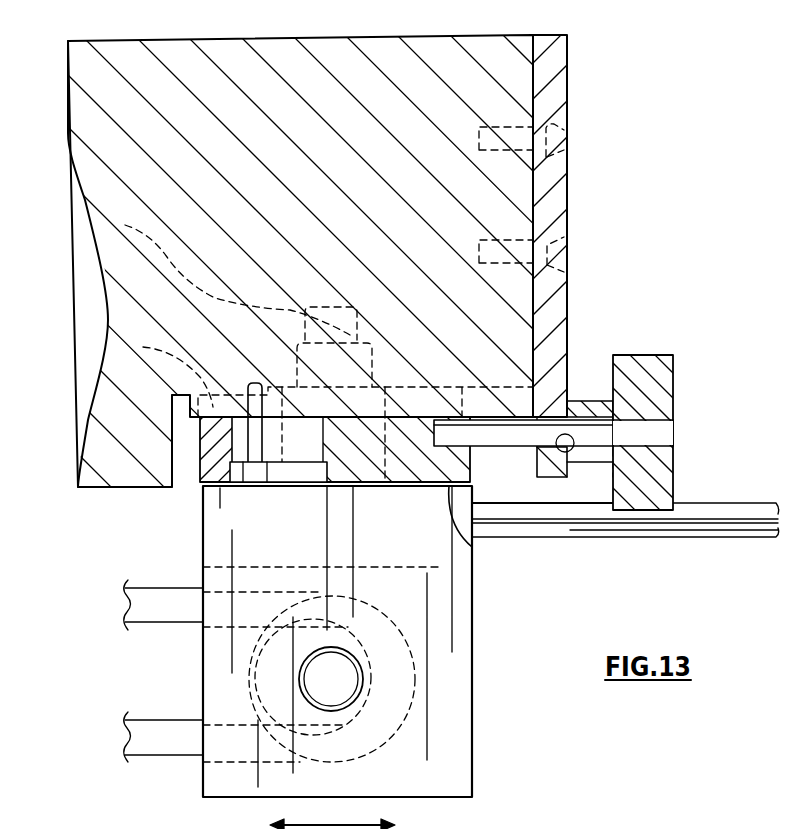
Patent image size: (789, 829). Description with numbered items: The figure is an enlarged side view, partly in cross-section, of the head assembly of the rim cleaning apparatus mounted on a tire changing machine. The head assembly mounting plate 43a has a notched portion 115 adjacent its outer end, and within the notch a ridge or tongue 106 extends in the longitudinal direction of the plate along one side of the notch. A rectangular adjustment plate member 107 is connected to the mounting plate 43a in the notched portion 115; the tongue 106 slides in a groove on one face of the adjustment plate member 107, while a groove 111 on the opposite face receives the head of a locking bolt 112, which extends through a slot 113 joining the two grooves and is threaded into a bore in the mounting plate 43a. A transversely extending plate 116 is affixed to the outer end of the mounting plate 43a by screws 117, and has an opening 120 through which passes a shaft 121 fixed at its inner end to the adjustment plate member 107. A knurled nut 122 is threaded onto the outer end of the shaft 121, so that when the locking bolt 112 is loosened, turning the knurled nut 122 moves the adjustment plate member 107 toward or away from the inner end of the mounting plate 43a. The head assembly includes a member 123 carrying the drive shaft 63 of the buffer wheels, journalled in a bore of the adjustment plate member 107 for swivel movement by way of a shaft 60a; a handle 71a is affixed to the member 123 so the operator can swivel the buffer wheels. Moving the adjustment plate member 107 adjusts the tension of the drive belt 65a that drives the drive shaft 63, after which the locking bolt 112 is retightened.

The mounting plate 43a is at (508, 83).
The transversely extending plate 116 is at (560, 192).
The screws 117 is at (555, 138).
The shaft 60a is at (117, 220).
The locking bolt 112 is at (255, 380).
The tongue 106 is at (120, 342).
The slot 113 is at (232, 437).
The notched portion 115 is at (182, 437).
The groove 111 is at (310, 487).
The shaft 121 is at (673, 442).
The handle 71a is at (708, 542).
The knurled nut 122 is at (657, 393).
The opening 120 is at (574, 446).
The member 123 is at (476, 757).
The drive belt 65a is at (152, 597).
The drive shaft 63 is at (343, 688).
The adjustment plate member 107 is at (459, 540).